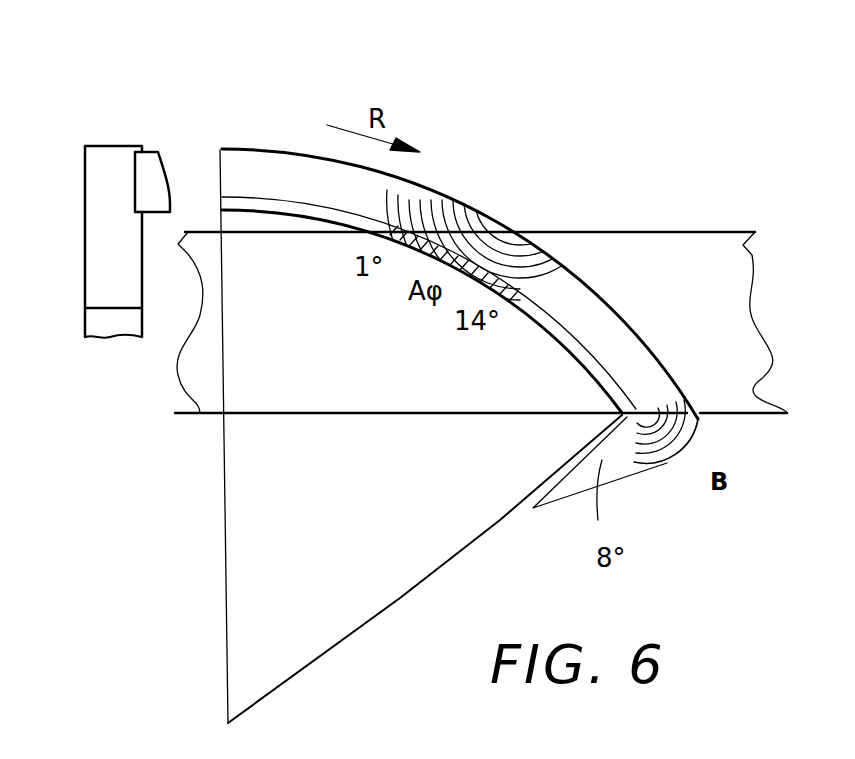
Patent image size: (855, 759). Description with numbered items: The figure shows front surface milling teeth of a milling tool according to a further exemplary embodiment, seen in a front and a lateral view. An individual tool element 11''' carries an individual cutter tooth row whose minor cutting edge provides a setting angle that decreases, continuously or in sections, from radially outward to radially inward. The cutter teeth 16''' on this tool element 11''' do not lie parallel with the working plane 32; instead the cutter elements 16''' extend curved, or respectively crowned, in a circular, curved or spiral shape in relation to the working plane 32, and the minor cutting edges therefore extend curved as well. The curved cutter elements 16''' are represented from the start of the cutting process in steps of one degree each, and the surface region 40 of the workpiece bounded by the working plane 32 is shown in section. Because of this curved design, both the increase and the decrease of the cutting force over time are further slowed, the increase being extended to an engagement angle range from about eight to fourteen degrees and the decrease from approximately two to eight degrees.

The tool element 11''' is at (94, 211).
The cutter teeth 16''' is at (366, 191).
The working plane 32 is at (481, 276).
The workpiece surface 40 is at (641, 230).